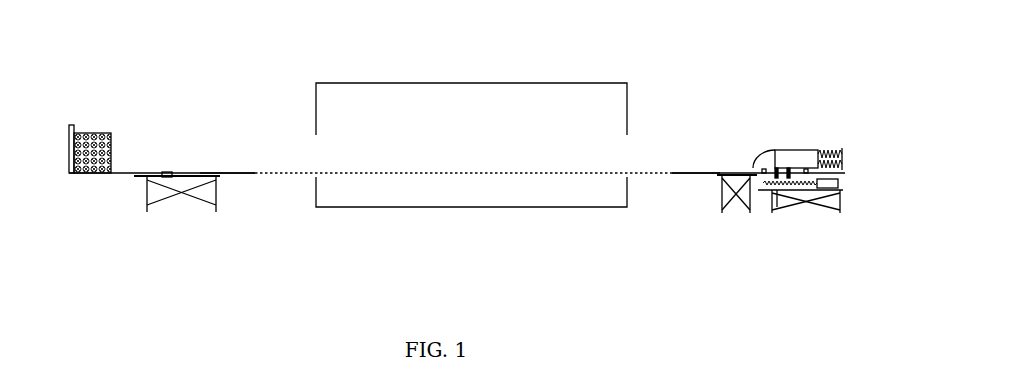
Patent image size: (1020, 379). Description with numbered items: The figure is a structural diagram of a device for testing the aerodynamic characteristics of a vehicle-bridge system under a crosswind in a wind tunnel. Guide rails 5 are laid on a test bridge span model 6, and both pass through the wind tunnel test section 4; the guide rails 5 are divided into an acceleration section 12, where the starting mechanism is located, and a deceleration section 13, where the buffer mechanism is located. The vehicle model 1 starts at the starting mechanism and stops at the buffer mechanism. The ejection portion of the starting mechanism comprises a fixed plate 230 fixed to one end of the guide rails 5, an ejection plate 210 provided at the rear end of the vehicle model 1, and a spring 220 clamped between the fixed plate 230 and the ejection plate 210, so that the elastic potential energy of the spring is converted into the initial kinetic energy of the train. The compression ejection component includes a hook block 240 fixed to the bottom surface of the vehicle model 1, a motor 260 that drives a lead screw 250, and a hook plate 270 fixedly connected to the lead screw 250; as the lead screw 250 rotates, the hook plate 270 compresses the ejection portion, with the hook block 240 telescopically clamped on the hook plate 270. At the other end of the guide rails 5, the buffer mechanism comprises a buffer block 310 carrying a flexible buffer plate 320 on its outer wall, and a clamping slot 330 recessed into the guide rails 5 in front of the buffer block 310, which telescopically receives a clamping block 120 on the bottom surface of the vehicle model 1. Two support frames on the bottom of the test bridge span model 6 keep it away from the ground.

The vehicle model 1 is at (813, 148).
The wind tunnel test section 4 is at (493, 82).
The guide rails 5 is at (290, 173).
The test bridge span model 6 is at (428, 174).
The acceleration section 12 is at (692, 172).
The deceleration section 13 is at (220, 170).
The clamping block 120 is at (778, 179).
The ejection plate 210 is at (822, 150).
The spring 220 is at (836, 150).
The fixed plate 230 is at (843, 155).
The hook block 240 is at (786, 170).
The lead screw 250 is at (765, 187).
The motor 260 is at (838, 184).
The hook plate 270 is at (783, 191).
The buffer block 310 is at (96, 133).
The flexible buffer plate 320 is at (70, 142).
The clamping slot 330 is at (167, 172).